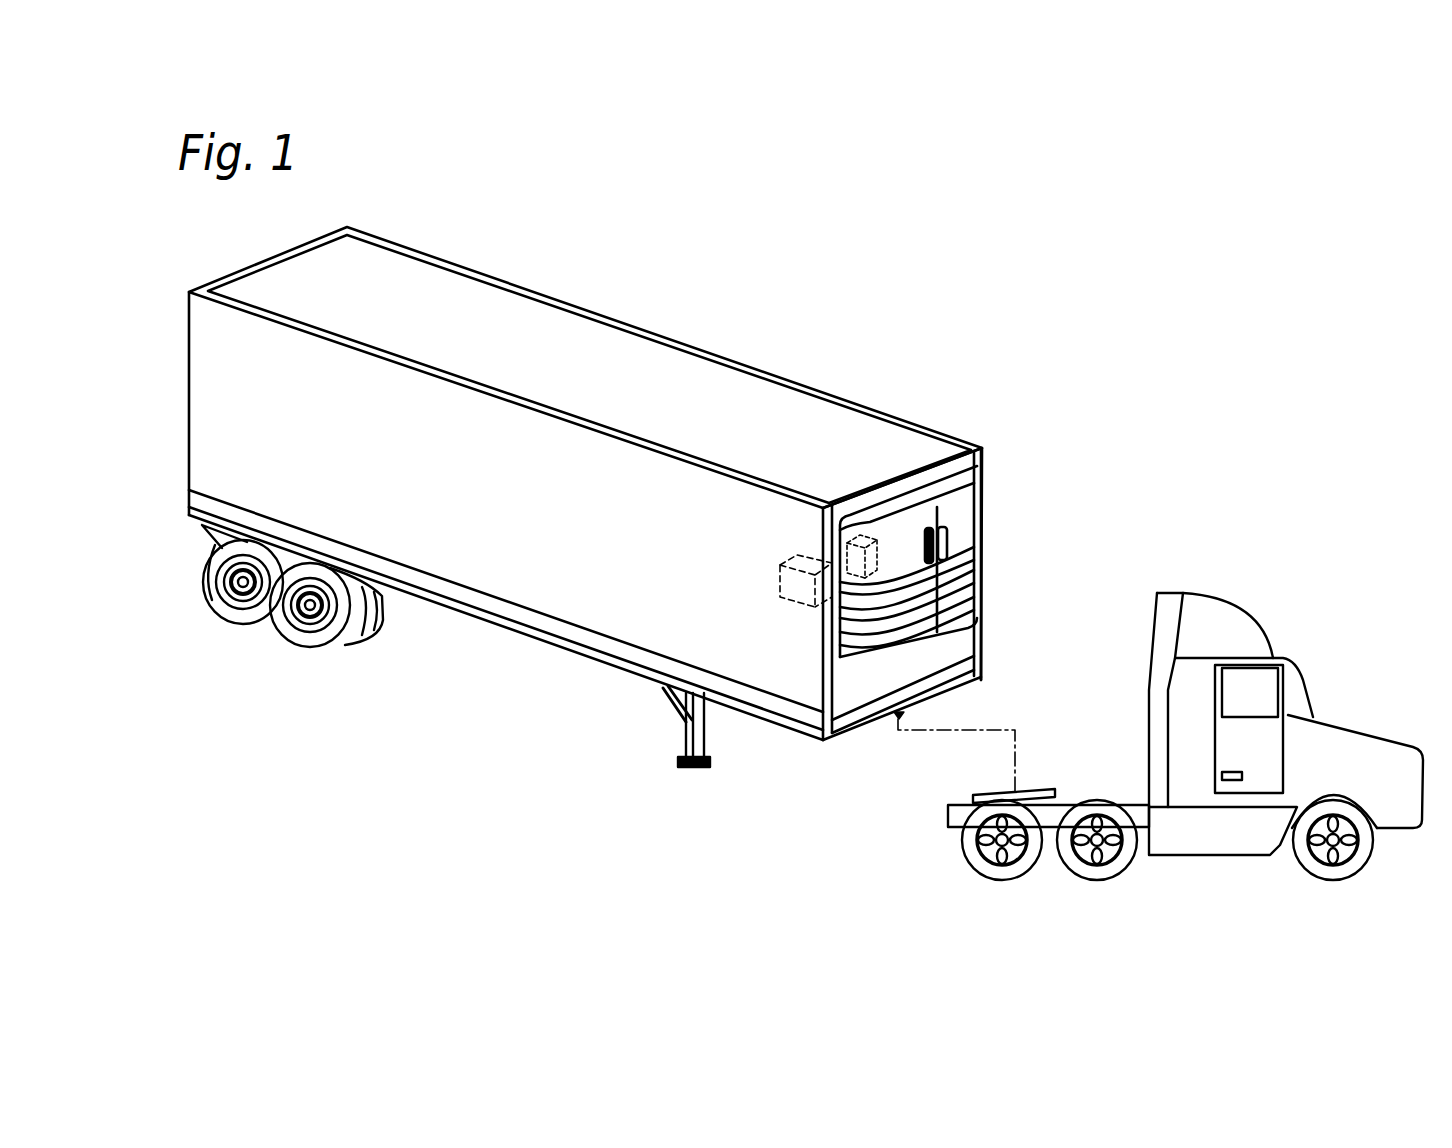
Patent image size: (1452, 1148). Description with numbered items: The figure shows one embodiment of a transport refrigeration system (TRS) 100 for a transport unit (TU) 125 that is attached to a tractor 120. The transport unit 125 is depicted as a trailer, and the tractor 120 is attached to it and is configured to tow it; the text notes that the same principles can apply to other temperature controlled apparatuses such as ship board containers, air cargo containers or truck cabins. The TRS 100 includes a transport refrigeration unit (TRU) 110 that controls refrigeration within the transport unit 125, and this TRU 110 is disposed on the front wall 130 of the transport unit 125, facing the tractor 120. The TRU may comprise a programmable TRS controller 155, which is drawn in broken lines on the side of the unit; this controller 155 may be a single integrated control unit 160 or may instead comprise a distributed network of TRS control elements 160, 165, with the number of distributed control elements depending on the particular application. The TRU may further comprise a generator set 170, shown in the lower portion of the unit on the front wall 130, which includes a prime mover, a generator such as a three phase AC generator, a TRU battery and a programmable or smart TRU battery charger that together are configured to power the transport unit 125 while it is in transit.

The transport refrigeration system (TRS) 100 is at (1068, 277).
The transport refrigeration unit (TRU) 110 is at (954, 561).
The tractor 120 is at (1348, 727).
The transport unit (TU) 125 is at (697, 373).
The front wall 130 is at (981, 449).
The TRS controller 155 is at (787, 597).
The integrated control unit / TRS control element 160 is at (857, 578).
The TRS control element 165 is at (670, 710).
The generator set 170 is at (970, 598).